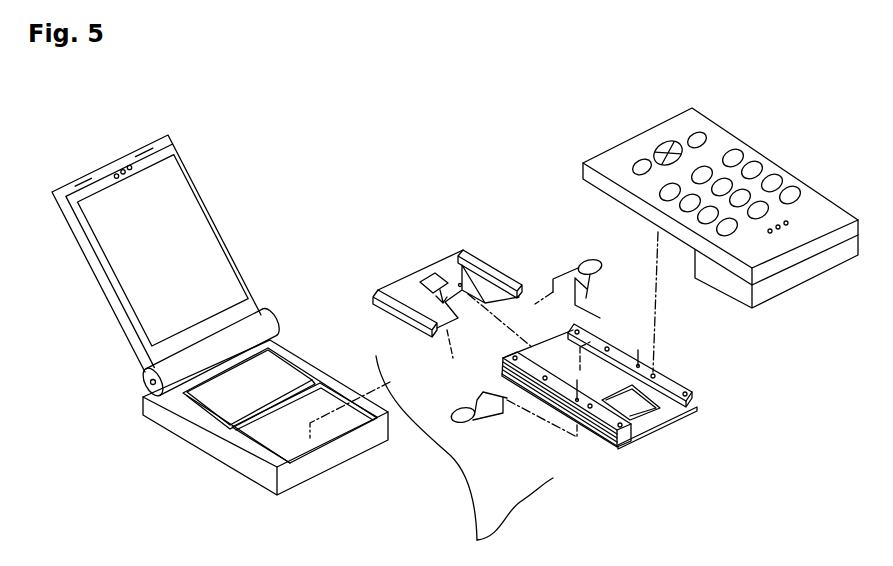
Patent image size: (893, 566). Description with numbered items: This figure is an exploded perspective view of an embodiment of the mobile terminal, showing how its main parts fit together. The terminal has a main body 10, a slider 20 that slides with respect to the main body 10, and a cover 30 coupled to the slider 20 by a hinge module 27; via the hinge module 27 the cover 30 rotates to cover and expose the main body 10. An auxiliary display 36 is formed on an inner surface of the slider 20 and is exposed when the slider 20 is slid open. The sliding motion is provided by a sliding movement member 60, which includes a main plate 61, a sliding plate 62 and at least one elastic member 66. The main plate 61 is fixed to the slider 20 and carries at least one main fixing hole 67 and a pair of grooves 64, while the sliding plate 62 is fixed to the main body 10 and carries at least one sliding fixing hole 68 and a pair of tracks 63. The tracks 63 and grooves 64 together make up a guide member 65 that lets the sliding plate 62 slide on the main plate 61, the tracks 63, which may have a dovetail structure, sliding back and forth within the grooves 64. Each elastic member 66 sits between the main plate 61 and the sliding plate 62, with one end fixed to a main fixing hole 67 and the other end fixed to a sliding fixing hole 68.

The main body 10 is at (727, 143).
The slider 20 is at (230, 455).
The hinge module 27 is at (148, 381).
The cover 30 is at (102, 283).
The auxiliary display 36 is at (223, 402).
The sliding movement member 60 is at (514, 345).
The main plate 61 is at (416, 256).
The sliding plate 62 is at (610, 406).
The tracks 63 is at (613, 447).
The grooves 64 is at (445, 337).
The guide member 65 is at (464, 459).
The elastic member 66 is at (560, 253).
The main fixing hole 67 is at (443, 302).
The sliding fixing hole 68 is at (655, 372).